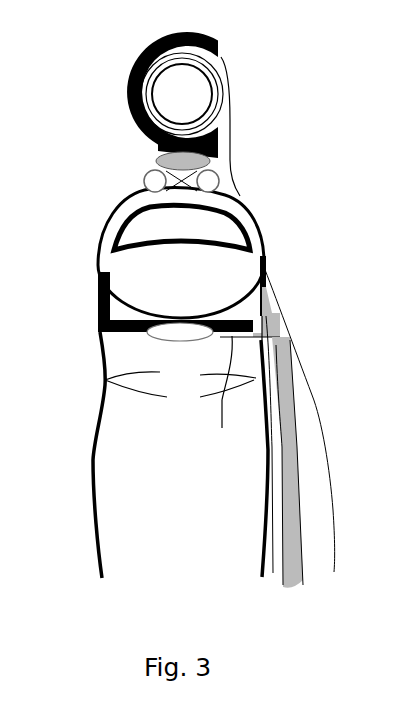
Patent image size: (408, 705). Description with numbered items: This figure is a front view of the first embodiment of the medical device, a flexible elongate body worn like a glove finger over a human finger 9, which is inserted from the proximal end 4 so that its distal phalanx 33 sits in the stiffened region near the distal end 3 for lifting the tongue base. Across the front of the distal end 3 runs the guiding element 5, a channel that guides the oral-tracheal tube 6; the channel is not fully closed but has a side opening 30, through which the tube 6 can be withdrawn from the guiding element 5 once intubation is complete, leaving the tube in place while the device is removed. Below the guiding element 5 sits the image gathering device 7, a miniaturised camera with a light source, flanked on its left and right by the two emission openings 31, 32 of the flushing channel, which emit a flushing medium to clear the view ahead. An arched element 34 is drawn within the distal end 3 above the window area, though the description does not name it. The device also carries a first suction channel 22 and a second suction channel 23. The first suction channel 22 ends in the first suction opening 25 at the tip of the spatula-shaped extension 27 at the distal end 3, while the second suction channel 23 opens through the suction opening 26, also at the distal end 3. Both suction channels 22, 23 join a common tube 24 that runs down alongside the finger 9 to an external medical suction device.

The distal end 3 is at (145, 252).
The proximal end 4 is at (146, 294).
The guiding element 5 is at (127, 80).
The oral-tracheal tube 6 is at (214, 76).
The image gathering device 7 is at (187, 190).
The human finger 9 is at (117, 507).
The first suction channel 22 is at (226, 393).
The second suction channel 23 is at (268, 312).
The common tube 24 is at (285, 513).
The first suction opening 25 is at (150, 336).
The suction opening 26 is at (208, 161).
The extension 27 is at (100, 308).
The side opening 30 is at (241, 105).
The emission opening 31 is at (143, 178).
The emission opening 32 is at (213, 177).
The distal phalanx 33 is at (168, 311).
The arch member 34 is at (147, 225).